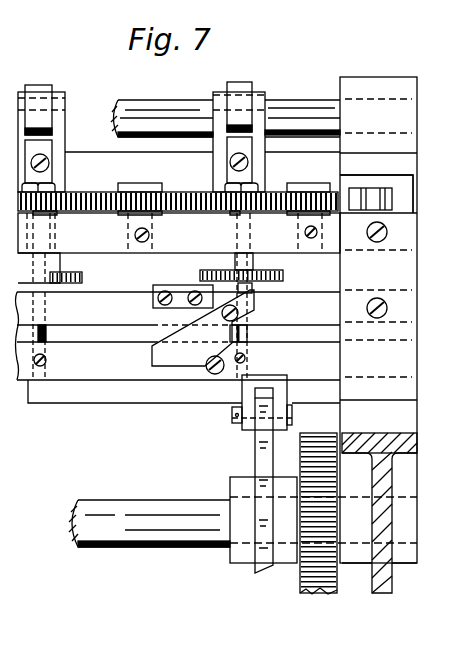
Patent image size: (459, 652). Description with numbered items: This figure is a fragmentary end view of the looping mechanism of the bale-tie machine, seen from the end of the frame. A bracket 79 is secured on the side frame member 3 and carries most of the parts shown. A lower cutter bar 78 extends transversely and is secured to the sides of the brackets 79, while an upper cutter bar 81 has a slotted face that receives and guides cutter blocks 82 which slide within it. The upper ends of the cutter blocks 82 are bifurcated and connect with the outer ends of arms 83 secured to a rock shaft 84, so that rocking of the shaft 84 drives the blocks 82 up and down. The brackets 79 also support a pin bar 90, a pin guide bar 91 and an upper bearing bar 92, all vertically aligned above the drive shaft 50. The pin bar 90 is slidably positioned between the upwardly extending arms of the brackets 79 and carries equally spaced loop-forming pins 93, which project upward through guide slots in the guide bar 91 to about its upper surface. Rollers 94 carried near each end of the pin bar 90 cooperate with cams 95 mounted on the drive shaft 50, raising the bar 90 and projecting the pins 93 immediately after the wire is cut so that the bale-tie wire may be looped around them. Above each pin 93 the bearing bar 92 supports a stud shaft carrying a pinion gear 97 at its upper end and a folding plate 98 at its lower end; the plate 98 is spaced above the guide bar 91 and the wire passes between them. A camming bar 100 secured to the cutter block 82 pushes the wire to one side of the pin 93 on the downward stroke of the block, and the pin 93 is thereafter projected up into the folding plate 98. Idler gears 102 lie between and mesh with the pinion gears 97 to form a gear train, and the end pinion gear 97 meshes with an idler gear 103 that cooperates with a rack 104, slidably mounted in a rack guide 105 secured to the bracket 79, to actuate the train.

The side frame member 3 is at (403, 476).
The drive shaft 50 is at (138, 500).
The lower cutter bar 78 is at (68, 401).
The bracket 79 is at (403, 411).
The upper cutter bar 81 is at (102, 153).
The cutter block 82 is at (64, 125).
The arm 83 is at (47, 88).
The rock shaft 84 is at (294, 108).
The pin bar 90 is at (107, 368).
The pin guide bar 91 is at (118, 300).
The upper bearing bar 92 is at (178, 247).
The loop-forming pin 93 is at (43, 320).
The roller 94 is at (242, 419).
The cam 95 is at (256, 461).
The pinion gear 97 is at (56, 190).
The folding plate 98 is at (79, 277).
The camming bar 100 is at (244, 238).
The idler gear 102 is at (128, 195).
The idler gear 103 is at (310, 195).
The rack 104 is at (378, 199).
The rack guide 105 is at (406, 191).